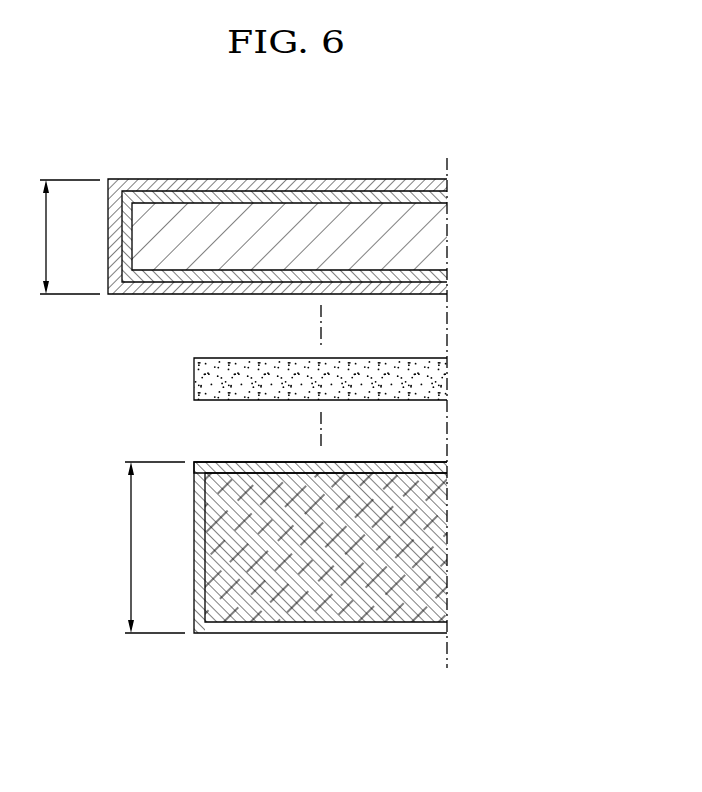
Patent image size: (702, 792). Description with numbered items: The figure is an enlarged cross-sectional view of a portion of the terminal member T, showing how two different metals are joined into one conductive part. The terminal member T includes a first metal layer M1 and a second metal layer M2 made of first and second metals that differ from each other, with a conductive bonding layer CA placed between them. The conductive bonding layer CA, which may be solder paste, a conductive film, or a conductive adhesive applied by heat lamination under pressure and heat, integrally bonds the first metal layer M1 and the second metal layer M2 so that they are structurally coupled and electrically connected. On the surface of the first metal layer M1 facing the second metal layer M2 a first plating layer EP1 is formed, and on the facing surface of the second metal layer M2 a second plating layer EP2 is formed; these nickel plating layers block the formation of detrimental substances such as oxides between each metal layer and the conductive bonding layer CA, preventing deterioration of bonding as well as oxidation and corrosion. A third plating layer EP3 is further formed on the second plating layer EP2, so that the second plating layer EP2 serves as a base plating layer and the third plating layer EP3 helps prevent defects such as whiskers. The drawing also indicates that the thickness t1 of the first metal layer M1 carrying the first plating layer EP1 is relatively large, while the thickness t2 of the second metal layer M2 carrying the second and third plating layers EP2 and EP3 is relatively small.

The terminal member T is at (536, 152).
The second metal layer M2 is at (438, 238).
The second plating layer EP2 is at (442, 278).
The third plating layer EP3 is at (442, 288).
The conductive bonding layer CA is at (438, 381).
The first plating layer EP1 is at (442, 467).
The first metal layer M1 is at (438, 551).
The thickness of the first metal layer t1 is at (145, 547).
The thickness of the second metal layer t2 is at (60, 237).